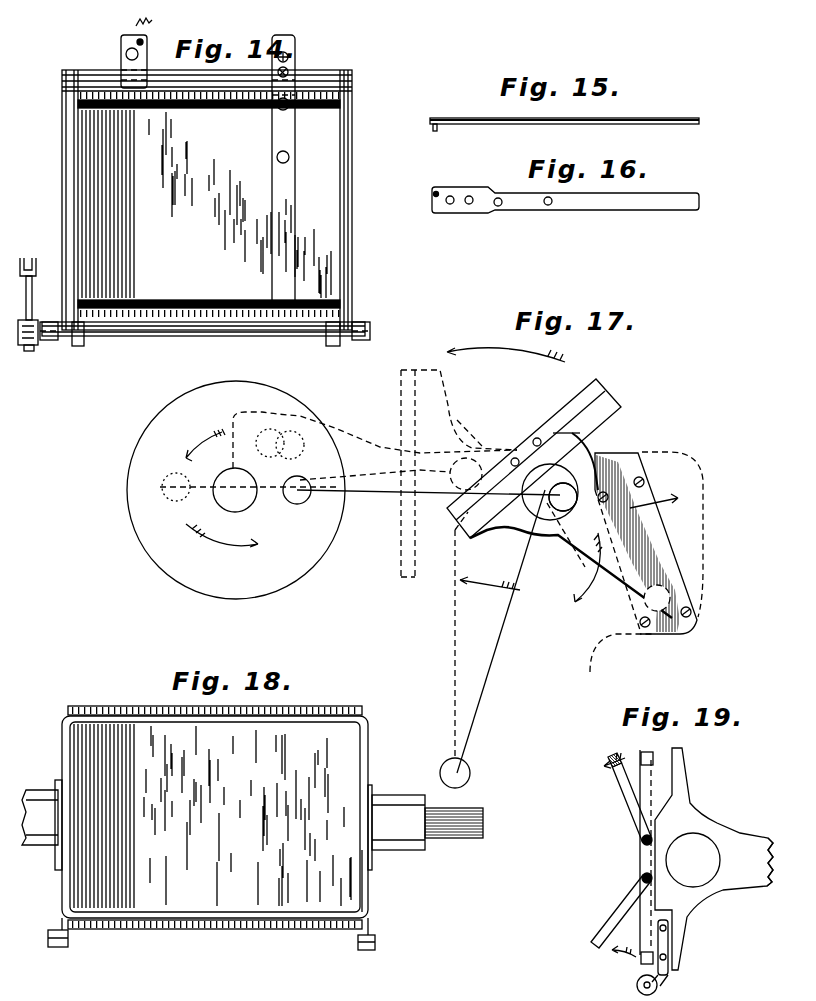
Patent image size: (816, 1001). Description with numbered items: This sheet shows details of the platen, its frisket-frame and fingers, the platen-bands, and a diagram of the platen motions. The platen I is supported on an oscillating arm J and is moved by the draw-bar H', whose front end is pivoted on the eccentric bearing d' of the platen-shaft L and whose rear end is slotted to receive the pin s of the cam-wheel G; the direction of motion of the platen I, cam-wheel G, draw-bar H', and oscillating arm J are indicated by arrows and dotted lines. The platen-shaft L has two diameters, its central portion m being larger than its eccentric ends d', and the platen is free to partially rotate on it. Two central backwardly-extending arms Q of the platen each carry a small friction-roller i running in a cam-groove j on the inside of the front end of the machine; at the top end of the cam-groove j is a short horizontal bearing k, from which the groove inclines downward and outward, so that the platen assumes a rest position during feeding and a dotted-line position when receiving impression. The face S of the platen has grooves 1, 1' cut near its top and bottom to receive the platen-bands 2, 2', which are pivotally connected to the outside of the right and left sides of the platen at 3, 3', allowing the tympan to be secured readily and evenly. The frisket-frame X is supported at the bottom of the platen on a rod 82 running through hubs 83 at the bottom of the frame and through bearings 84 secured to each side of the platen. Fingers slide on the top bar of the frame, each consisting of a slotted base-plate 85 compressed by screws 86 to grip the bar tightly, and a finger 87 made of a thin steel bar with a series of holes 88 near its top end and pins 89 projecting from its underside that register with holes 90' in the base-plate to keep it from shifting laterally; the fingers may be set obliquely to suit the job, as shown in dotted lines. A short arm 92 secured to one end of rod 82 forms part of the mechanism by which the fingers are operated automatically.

In FIG. 14, the groove 1 is at (209, 114).
In FIG. 18, the groove 1 is at (203, 710).
In FIG. 19, the groove 1 is at (640, 747).
In FIG. 14, the groove 1' is at (209, 293).
In FIG. 18, the groove 1' is at (215, 911).
In FIG. 19, the groove 1' is at (632, 964).
In FIG. 18, the platen-band 2 is at (224, 817).
In FIG. 19, the platen-band 2 is at (618, 850).
In FIG. 18, the platen-band 2' is at (376, 881).
In FIG. 19, the pivotal connection 3 is at (637, 838).
In FIG. 19, the pivotal connection 3' is at (635, 883).
In FIG. 14, the rod 82 is at (142, 337).
In FIG. 14, the hub 83 is at (84, 338).
In FIG. 14, the bearing 84 is at (52, 342).
In FIG. 18, the bearing 84 is at (56, 948).
In FIG. 14, the base-plate 85 is at (121, 50).
In FIG. 14, the screw 86 is at (289, 57).
In FIG. 14, the finger 87 is at (281, 198).
In FIG. 15, the finger 87 is at (658, 120).
In FIG. 16, the finger 87 is at (676, 198).
In FIG. 16, the hole 88 is at (470, 196).
In FIG. 15, the pin 89 is at (437, 131).
In FIG. 16, the pin 89 is at (436, 192).
In FIG. 14, the hole 90' is at (156, 27).
In FIG. 14, the short arm 92 is at (37, 287).
In FIG. 14, the face of the platen S is at (206, 204).
In FIG. 17, the face of the platen S is at (534, 440).
In FIG. 18, the face of the platen S is at (212, 816).
In FIG. 19, the face of the platen S is at (640, 857).
In FIG. 14, the frisket-frame X is at (353, 166).
In FIG. 17, the cam-wheel G is at (236, 490).
In FIG. 17, the connecting-rod (draw-bar) H' is at (375, 453).
In FIG. 17, the shaft b is at (250, 490).
In FIG. 17, the pin s is at (421, 494).
In FIG. 17, the platen I is at (402, 398).
In FIG. 19, the platen I is at (683, 791).
In FIG. 17, the platen-shaft L is at (551, 476).
In FIG. 18, the platen-shaft L is at (42, 818).
In FIG. 19, the platen-shaft L is at (693, 860).
In FIG. 17, the horizontal bearing k is at (616, 468).
In FIG. 17, the cam-groove j is at (654, 504).
In FIG. 17, the eccentric bearing d' is at (593, 556).
In FIG. 18, the eccentric bearing d' is at (454, 837).
In FIG. 17, the arm Q is at (583, 540).
In FIG. 19, the arm Q is at (758, 862).
In FIG. 17, the friction-roller i is at (648, 636).
In FIG. 17, the oscillating arm J is at (492, 662).
In FIG. 18, the central portion of platen-shaft m is at (396, 822).